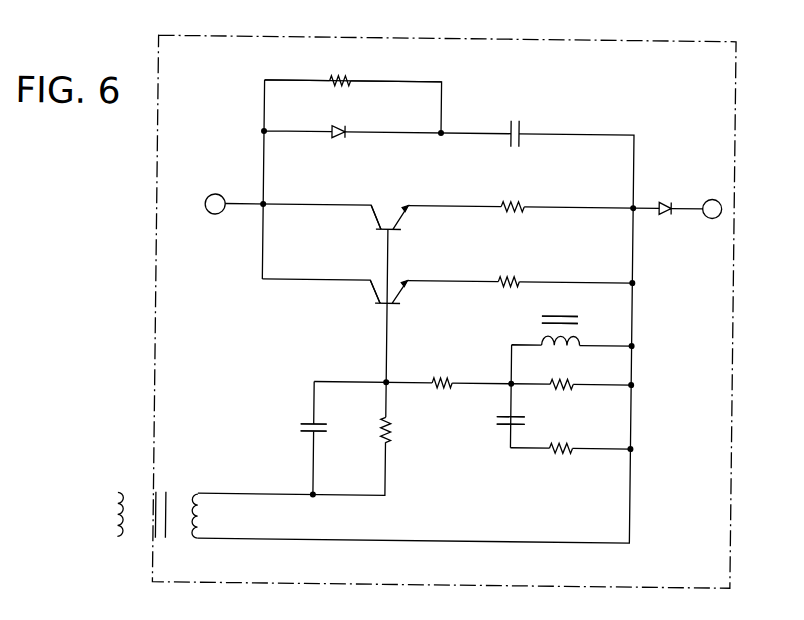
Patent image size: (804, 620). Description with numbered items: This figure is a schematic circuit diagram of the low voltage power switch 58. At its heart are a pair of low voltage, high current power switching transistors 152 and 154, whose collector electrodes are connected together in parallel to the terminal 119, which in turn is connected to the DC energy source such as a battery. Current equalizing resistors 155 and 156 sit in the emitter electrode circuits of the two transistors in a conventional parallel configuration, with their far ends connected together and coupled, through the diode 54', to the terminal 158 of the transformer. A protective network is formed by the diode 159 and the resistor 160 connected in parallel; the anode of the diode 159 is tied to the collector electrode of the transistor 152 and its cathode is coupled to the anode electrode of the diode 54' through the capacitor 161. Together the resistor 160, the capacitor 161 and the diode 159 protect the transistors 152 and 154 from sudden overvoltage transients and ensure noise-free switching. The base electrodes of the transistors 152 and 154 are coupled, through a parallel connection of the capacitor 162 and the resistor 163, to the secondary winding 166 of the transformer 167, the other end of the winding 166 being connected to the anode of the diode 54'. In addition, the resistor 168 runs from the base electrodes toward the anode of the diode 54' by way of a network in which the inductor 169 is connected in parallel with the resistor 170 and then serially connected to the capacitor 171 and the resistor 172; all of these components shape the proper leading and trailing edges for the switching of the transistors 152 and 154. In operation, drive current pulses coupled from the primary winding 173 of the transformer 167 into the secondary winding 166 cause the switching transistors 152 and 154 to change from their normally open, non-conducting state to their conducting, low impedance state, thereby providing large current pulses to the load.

The low voltage power switch 58 is at (708, 41).
The terminal 119 is at (212, 196).
The power switching transistor 152 is at (376, 210).
The power switching transistor 154 is at (375, 306).
The current equalizing resistor 155 is at (509, 200).
The current equalizing resistor 156 is at (504, 275).
The terminal of transformer 158 is at (706, 216).
The diode 159 is at (343, 128).
The resistor 160 is at (347, 77).
The capacitor 161 is at (518, 128).
The capacitor 162 is at (302, 426).
The resistor 163 is at (393, 427).
The secondary winding 166 is at (203, 519).
The transformer 167 is at (143, 484).
The resistor 168 is at (440, 377).
The inductor 169 is at (581, 321).
The resistor 170 is at (568, 387).
The capacitor 171 is at (498, 417).
The resistor 172 is at (558, 452).
The primary winding 173 is at (116, 517).
The diode 54' is at (664, 188).